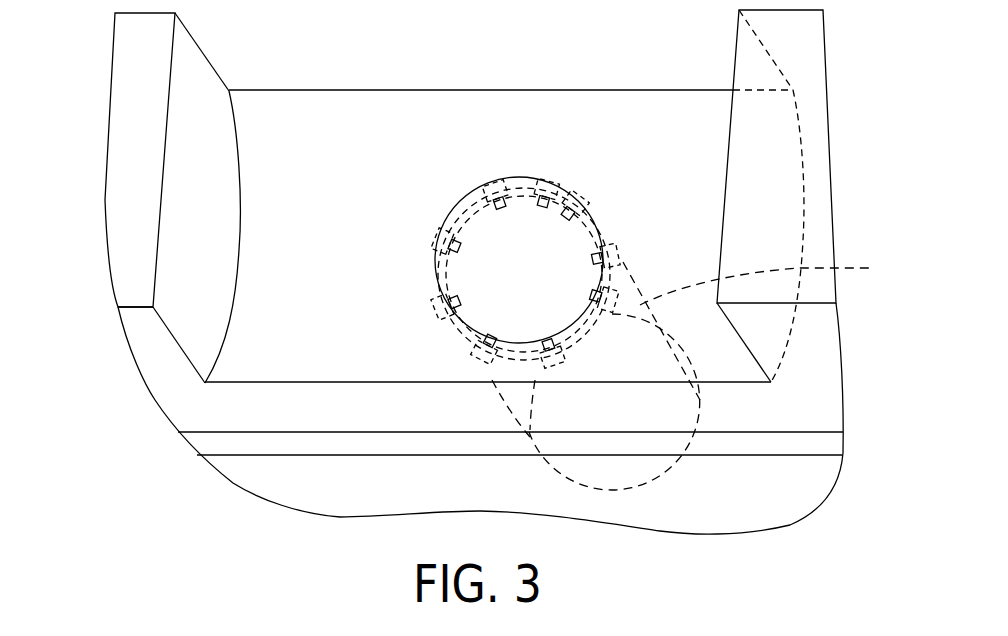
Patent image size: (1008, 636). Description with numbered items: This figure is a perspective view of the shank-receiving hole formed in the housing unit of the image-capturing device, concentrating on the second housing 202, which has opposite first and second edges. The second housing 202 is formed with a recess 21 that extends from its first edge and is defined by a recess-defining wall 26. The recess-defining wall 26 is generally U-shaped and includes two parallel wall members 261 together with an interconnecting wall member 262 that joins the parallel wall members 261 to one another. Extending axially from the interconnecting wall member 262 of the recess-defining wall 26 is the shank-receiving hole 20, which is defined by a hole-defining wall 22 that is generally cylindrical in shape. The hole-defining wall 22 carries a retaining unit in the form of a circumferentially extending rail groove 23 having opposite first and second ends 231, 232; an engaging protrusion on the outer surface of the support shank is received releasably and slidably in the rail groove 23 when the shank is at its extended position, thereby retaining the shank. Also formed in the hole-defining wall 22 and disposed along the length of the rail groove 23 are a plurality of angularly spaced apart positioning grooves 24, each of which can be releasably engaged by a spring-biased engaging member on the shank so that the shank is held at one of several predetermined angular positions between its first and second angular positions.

The shank-receiving hole 20 is at (503, 403).
The recess 21 is at (288, 355).
The hole-defining wall 22 is at (771, 279).
The rail groove 23 is at (627, 263).
The first end 231 is at (516, 172).
The second end 232 is at (543, 174).
The positioning grooves 24 is at (575, 182).
The recess-defining wall 26 is at (377, 112).
The parallel wall members 261 is at (198, 112).
The interconnecting wall member 262 is at (317, 130).
The second housing 202 is at (128, 182).